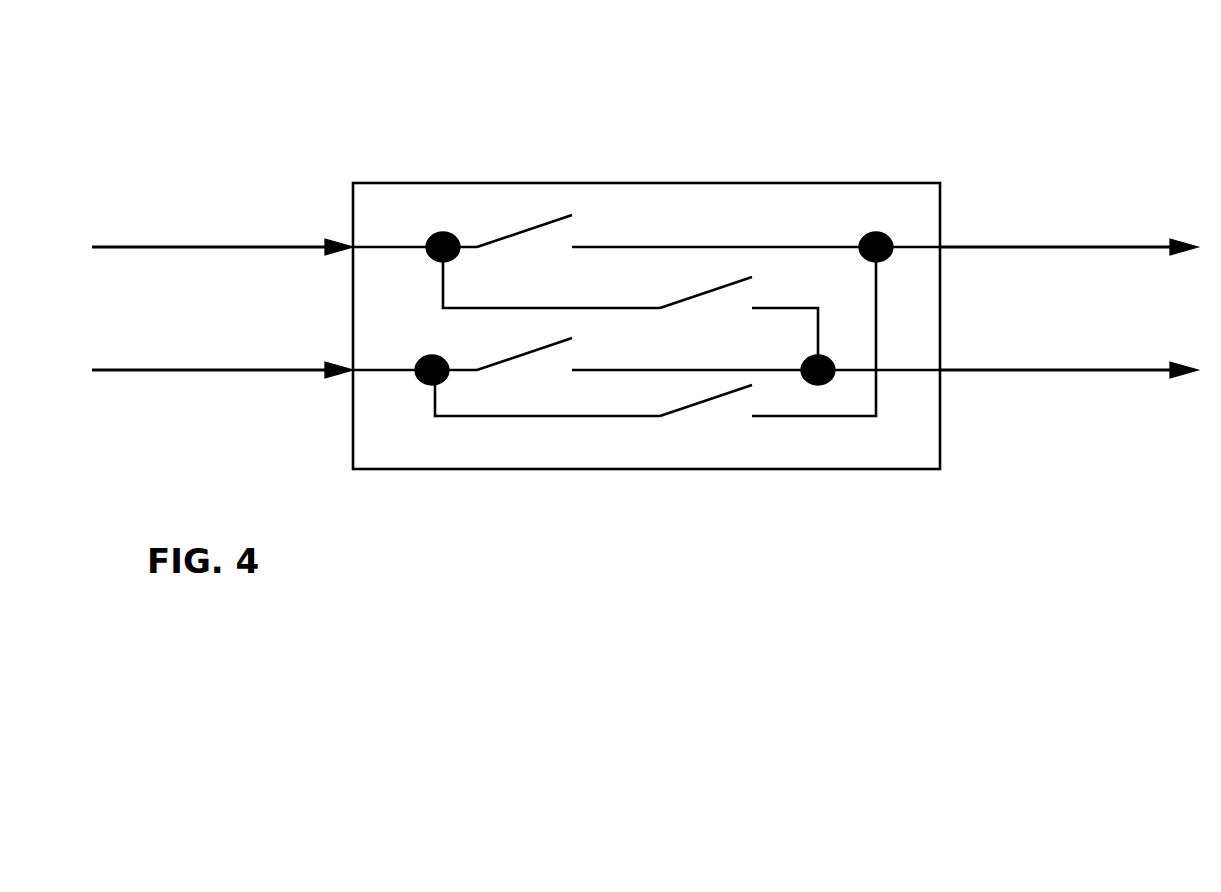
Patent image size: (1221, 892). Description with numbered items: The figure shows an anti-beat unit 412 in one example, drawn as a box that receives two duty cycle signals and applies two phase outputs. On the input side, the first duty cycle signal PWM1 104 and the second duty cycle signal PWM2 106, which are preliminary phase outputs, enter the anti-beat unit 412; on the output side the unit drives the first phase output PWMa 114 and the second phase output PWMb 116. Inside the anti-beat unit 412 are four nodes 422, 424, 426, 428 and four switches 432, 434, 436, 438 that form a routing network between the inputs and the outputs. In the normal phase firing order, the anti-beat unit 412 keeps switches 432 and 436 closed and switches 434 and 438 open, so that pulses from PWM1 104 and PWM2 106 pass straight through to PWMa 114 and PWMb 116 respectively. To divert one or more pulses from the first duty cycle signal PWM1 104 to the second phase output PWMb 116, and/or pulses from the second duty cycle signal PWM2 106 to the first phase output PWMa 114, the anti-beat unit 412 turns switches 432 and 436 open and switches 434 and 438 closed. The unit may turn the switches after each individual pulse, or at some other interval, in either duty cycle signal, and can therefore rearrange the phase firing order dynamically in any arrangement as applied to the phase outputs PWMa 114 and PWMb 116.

The anti-beat unit 412 is at (563, 183).
The duty cycle signal PWM1 104 is at (243, 234).
The duty cycle signal PWM2 106 is at (243, 357).
The phase output PWMa 114 is at (1087, 234).
The phase output PWMb 116 is at (1087, 357).
The node 422 is at (438, 232).
The node 424 is at (868, 235).
The node 426 is at (424, 385).
The node 428 is at (827, 385).
The switch 432 is at (518, 230).
The switch 434 is at (708, 290).
The switch 436 is at (528, 372).
The switch 438 is at (718, 413).